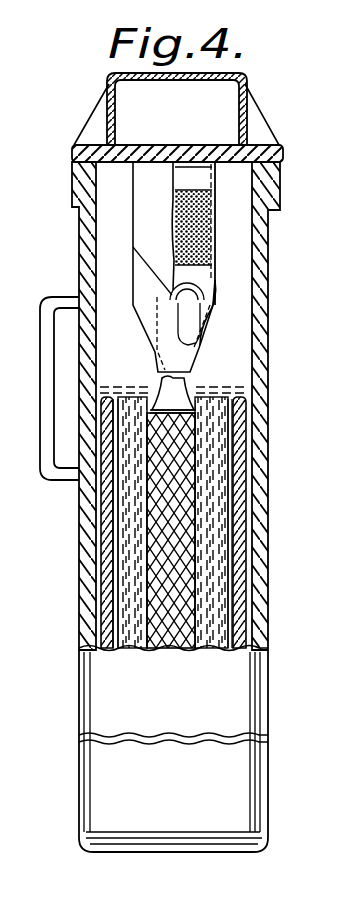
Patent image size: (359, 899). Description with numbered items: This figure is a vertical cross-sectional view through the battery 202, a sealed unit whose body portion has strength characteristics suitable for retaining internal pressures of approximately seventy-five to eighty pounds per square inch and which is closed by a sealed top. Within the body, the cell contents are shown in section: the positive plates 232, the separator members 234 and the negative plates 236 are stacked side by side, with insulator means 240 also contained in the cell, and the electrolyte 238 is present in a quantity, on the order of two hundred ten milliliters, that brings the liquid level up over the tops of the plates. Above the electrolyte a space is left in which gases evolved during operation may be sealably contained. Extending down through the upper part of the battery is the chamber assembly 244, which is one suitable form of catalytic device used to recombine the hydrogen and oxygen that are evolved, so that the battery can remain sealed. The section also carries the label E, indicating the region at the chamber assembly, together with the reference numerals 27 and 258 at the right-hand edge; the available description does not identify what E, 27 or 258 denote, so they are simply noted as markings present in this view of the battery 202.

The battery 202 is at (258, 288).
The chamber assembly 244 is at (212, 189).
The section label E is at (223, 237).
The electrolyte 238 is at (230, 394).
The positive plates 232 is at (167, 460).
The separator members 234 is at (210, 512).
The insulator means 240 is at (242, 531).
The negative plates 236 is at (240, 590).
The partial numeral 27 is at (350, 450).
The partial numeral 258 is at (358, 571).